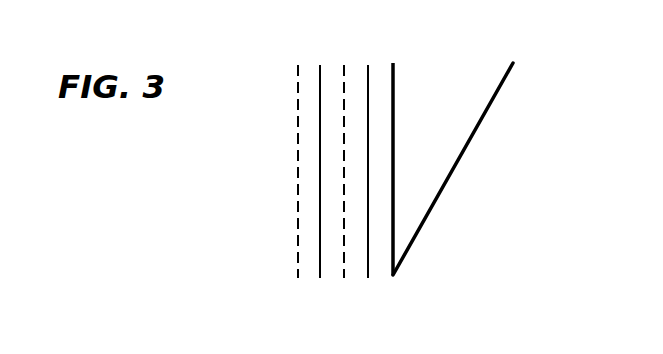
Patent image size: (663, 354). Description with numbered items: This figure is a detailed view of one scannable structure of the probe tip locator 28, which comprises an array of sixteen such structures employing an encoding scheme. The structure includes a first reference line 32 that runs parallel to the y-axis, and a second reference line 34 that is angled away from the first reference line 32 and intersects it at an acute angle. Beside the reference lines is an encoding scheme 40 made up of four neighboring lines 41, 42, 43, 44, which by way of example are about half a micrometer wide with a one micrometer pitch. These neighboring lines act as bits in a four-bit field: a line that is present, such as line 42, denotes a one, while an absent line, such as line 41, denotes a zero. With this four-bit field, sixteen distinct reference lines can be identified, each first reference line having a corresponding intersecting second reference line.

The probe tip locator 28 is at (128, 136).
The first reference line 32 is at (394, 85).
The second reference line 34 is at (507, 85).
The encoding scheme 40 is at (369, 53).
The neighboring line 41 is at (298, 278).
The neighboring line 42 is at (320, 278).
The neighboring line 43 is at (344, 278).
The neighboring line 44 is at (368, 278).